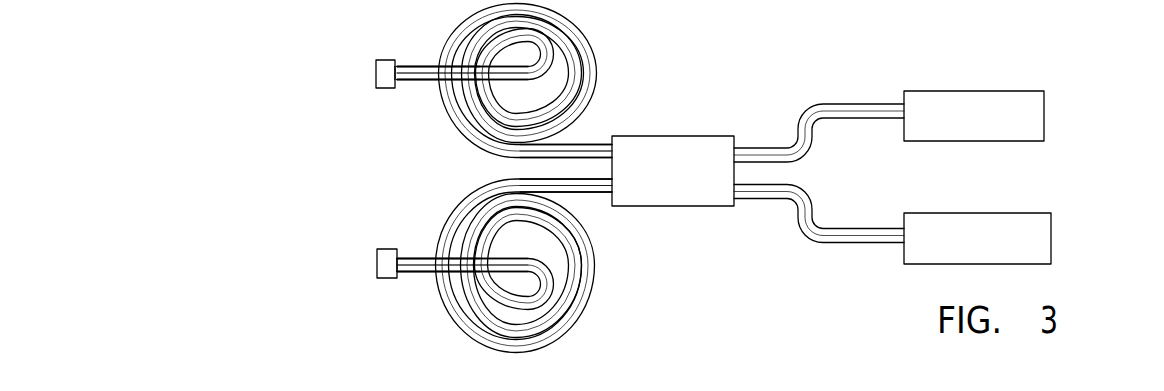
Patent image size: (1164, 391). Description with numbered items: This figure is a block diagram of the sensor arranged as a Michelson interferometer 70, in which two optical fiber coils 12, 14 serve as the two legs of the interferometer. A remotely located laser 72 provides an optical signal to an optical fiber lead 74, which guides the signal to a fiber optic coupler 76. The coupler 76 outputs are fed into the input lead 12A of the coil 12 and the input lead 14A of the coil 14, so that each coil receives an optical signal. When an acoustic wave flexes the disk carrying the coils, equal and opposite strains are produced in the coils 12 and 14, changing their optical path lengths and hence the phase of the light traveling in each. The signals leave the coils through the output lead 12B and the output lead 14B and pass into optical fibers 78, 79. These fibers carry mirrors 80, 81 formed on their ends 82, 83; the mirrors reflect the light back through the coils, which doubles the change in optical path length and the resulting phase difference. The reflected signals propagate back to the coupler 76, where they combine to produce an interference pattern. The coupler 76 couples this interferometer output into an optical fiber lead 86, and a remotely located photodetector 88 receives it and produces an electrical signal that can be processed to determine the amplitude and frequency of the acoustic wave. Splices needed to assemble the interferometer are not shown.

The optical fiber coil 12 is at (590, 36).
The input lead 12A is at (585, 143).
The output lead 12B is at (505, 82).
The optical fiber coil 14 is at (587, 303).
The input lead 14A is at (586, 199).
The output lead 14B is at (512, 256).
The interferometer 70 is at (348, 165).
The laser 72 is at (1044, 114).
The optical fiber lead 74 is at (846, 121).
The fiber optic coupler 76 is at (695, 206).
The optical fiber 78 is at (406, 63).
The optical fiber 79 is at (403, 271).
The mirror 80 is at (385, 90).
The mirror 81 is at (383, 280).
The end 82 is at (395, 82).
The end 83 is at (396, 268).
The optical fiber lead 86 is at (852, 245).
The photodetector 88 is at (1051, 241).